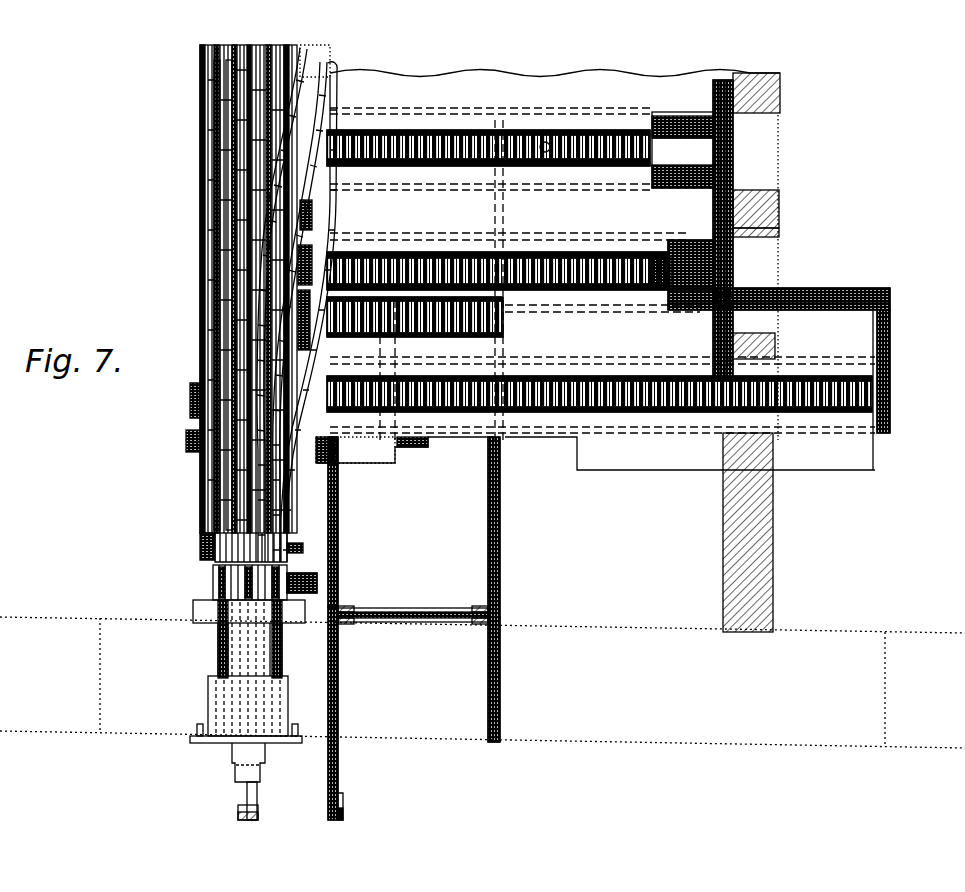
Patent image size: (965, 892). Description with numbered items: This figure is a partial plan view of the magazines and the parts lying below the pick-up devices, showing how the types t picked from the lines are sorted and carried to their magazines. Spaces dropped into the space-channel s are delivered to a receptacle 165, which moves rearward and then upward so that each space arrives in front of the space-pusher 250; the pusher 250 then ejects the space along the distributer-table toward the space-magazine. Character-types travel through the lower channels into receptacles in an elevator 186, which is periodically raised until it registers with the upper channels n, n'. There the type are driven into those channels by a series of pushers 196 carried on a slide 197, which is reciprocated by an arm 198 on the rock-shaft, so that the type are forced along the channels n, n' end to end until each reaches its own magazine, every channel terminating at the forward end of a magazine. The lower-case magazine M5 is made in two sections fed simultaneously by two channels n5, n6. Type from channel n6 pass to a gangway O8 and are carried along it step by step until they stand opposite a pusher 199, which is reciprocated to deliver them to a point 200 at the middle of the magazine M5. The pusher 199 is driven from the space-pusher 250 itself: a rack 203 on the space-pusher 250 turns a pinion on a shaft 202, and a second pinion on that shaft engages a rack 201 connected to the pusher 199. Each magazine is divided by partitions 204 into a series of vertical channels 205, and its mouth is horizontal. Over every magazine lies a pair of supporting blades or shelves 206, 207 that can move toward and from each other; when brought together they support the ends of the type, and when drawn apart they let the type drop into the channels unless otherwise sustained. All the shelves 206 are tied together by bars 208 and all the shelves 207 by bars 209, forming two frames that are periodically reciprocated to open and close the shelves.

The space-channel s is at (204, 268).
The receptacle 165 is at (203, 440).
The channel n is at (189, 295).
The channel n' is at (195, 295).
The type t is at (288, 500).
The channel n6 is at (291, 515).
The channel n5 is at (282, 528).
The space-pusher 250 is at (338, 551).
The elevator 186 is at (213, 575).
The pushers 196 is at (222, 628).
The slide 197 is at (242, 748).
The arm 198 is at (246, 805).
The pusher 199 is at (500, 478).
The shaft 202 is at (424, 605).
The rack 203 is at (340, 661).
The rack 201 is at (500, 643).
The vertical channels 205 is at (540, 145).
The partitions 204 is at (574, 146).
The supporting blade or shelf 206 is at (716, 131).
The supporting blade or shelf 207 is at (714, 176).
The bars 208 is at (745, 211).
The bars 209 is at (745, 232).
The point 200 is at (510, 264).
The lower-case magazine M5 is at (668, 272).
The rack O8 is at (490, 326).